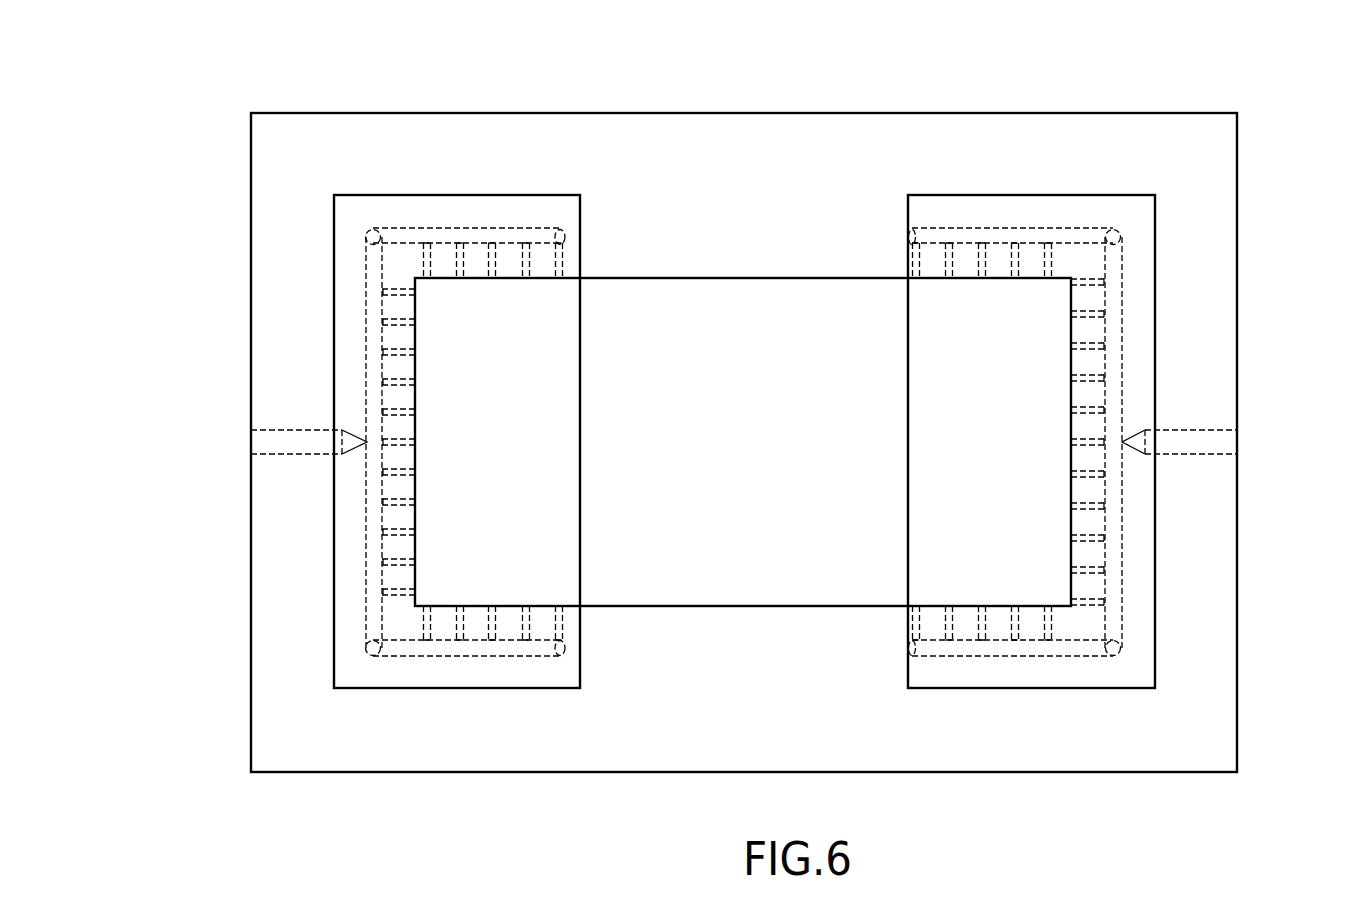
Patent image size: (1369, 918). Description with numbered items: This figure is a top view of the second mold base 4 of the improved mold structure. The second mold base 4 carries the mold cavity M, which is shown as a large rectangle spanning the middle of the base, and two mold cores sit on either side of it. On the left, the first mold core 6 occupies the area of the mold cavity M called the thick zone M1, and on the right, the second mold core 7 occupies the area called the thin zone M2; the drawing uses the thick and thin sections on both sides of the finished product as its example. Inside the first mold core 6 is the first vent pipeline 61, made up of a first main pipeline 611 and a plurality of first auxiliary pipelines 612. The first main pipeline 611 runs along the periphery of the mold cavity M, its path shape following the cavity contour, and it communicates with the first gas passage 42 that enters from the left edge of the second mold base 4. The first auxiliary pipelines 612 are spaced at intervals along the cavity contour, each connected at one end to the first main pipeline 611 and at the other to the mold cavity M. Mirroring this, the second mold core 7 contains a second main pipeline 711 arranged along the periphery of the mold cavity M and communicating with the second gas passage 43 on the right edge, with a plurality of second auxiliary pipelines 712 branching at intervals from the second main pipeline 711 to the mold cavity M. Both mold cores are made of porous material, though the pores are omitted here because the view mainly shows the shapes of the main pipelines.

The second mold base 4 is at (1237, 652).
The first mold core 6 is at (381, 689).
The first vent pipeline 61 is at (137, 262).
The first main pipeline 611 is at (365, 328).
The first auxiliary pipelines 612 is at (420, 261).
The second mold core 7 is at (1055, 689).
The second main pipeline 711 is at (1122, 352).
The second auxiliary pipelines 712 is at (1052, 260).
The first gas passage 42 is at (270, 440).
The second gas passage 43 is at (1215, 442).
The mold cavity M is at (727, 420).
The thick zone M1 is at (495, 461).
The thin zone M2 is at (1035, 461).